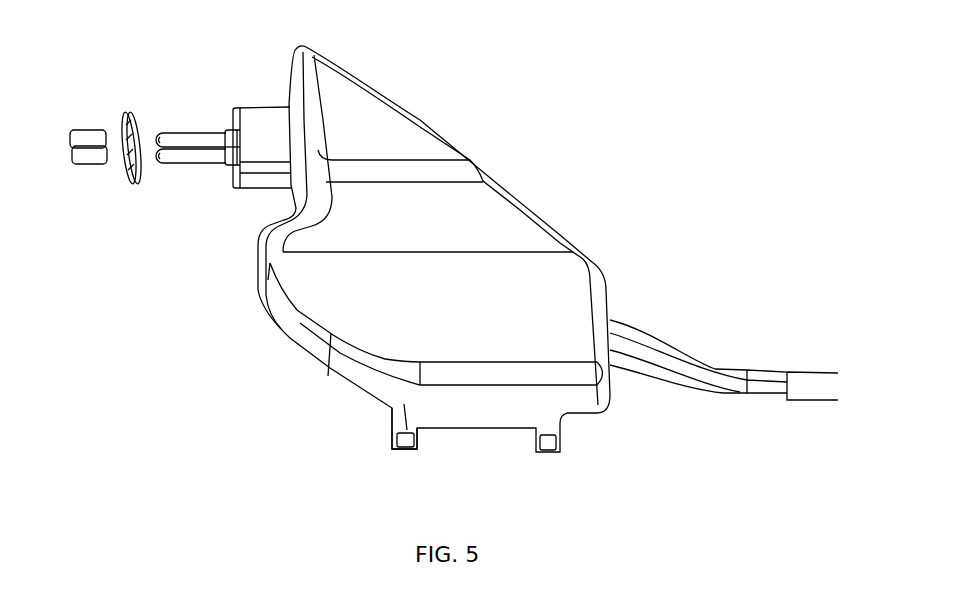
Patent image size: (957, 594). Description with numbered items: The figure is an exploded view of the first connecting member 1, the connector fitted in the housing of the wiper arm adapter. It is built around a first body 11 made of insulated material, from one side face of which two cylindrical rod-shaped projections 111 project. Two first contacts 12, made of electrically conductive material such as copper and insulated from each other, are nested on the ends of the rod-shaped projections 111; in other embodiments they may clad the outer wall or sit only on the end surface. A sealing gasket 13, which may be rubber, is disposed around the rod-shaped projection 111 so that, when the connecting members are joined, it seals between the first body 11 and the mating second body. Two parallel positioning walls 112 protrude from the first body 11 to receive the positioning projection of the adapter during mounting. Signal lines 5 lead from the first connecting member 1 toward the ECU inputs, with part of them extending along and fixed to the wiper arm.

The first connecting member 1 is at (583, 98).
The first body 11 is at (408, 143).
The rod-shaped projections 111 is at (198, 157).
The positioning walls 112 is at (410, 440).
The first contacts 12 is at (75, 157).
The sealing gasket 13 is at (128, 183).
The signal lines 5 is at (717, 368).